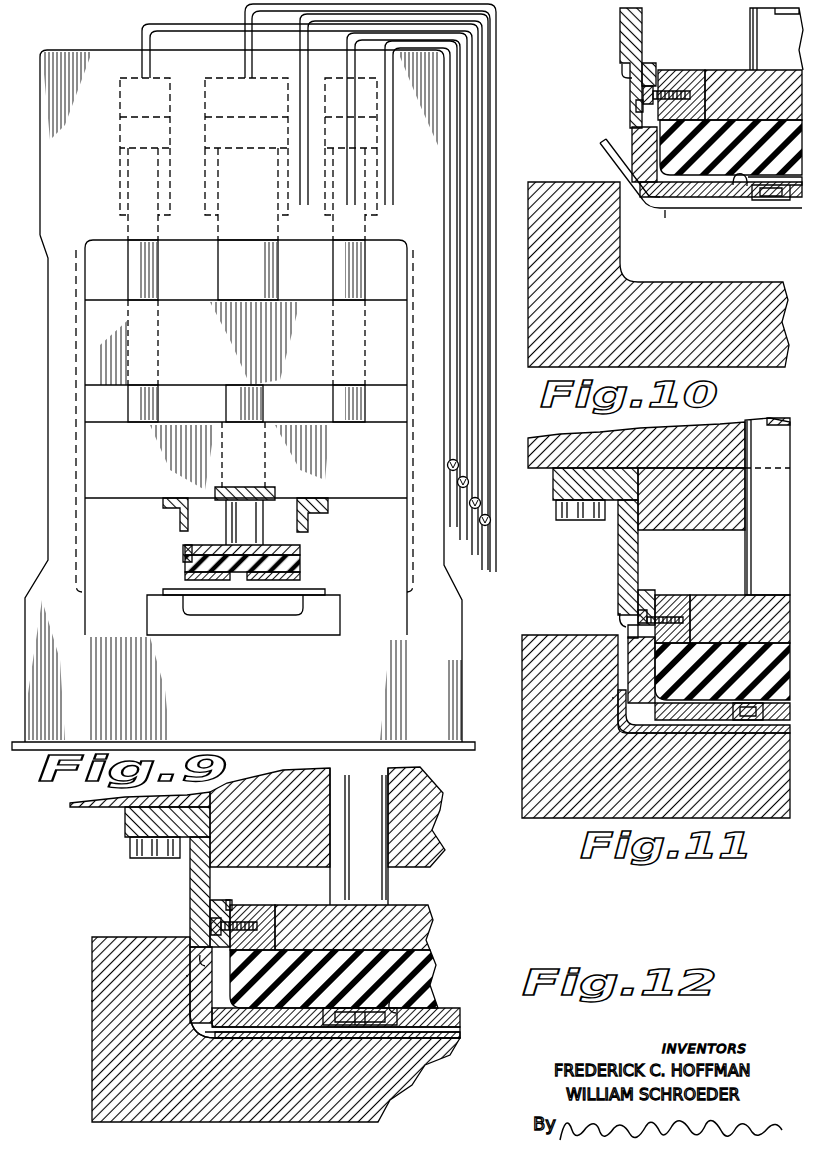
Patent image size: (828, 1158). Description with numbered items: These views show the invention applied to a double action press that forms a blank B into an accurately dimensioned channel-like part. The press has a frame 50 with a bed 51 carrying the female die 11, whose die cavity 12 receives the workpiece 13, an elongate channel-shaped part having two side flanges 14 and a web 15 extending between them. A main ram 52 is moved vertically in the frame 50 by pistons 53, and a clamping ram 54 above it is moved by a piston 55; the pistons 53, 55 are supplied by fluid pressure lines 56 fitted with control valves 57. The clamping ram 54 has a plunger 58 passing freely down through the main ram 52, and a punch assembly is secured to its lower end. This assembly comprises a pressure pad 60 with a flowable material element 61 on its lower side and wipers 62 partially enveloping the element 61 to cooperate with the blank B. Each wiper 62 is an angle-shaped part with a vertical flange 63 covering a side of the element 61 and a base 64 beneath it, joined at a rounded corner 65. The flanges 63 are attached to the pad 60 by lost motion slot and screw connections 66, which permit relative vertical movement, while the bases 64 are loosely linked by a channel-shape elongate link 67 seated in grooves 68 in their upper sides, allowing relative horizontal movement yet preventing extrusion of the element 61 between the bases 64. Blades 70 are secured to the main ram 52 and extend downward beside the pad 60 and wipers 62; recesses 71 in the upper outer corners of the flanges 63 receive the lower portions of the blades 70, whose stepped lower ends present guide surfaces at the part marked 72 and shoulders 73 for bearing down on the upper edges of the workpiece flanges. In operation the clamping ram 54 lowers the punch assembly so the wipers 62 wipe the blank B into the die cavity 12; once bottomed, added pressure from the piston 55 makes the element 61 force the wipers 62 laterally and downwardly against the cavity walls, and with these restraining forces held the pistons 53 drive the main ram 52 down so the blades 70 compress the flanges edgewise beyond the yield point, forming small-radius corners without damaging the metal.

In FIG. 9, the female die 11 is at (338, 620).
In FIG. 9, the die cavity 12 is at (236, 614).
In FIG. 10, the die cavity 12 is at (702, 281).
In FIG. 11, the die cavity 12 is at (756, 740).
In FIG. 12, the die cavity 12 is at (322, 1042).
In FIG. 11, the workpiece 13 is at (613, 697).
In FIG. 12, the workpiece 13 is at (186, 979).
In FIG. 12, the side flanges 14 is at (190, 1000).
In FIG. 12, the web 15 is at (345, 1040).
In FIG. 9, the frame 50 is at (52, 395).
In FIG. 9, the bed 51 is at (284, 693).
In FIG. 9, the main ram 52 is at (369, 454).
In FIG. 9, the pistons 53 is at (130, 130).
In FIG. 9, the clamping ram 54 is at (258, 362).
In FIG. 9, the piston 55 is at (268, 142).
In FIG. 9, the lines 56 is at (475, 443).
In FIG. 9, the control valves 57 is at (489, 523).
In FIG. 9, the plunger 58 is at (232, 401).
In FIG. 10, the plunger 58 is at (788, 53).
In FIG. 11, the plunger 58 is at (776, 549).
In FIG. 12, the plunger 58 is at (375, 830).
In FIG. 9, the pressure pad 60 is at (300, 550).
In FIG. 10, the pressure pad 60 is at (732, 70).
In FIG. 11, the pressure pad 60 is at (712, 597).
In FIG. 12, the pressure pad 60 is at (415, 907).
In FIG. 9, the flowable material element 61 is at (183, 563).
In FIG. 10, the flowable material element 61 is at (708, 122).
In FIG. 11, the flowable material element 61 is at (728, 648).
In FIG. 12, the flowable material element 61 is at (430, 976).
In FIG. 9, the wipers 62 is at (302, 574).
In FIG. 10, the wipers 62 is at (626, 126).
In FIG. 12, the wipers 62 is at (232, 902).
In FIG. 10, the vertical flanges 63 is at (635, 140).
In FIG. 11, the vertical flanges 63 is at (640, 660).
In FIG. 12, the vertical flanges 63 is at (200, 992).
In FIG. 10, the bases 64 is at (722, 204).
In FIG. 11, the bases 64 is at (660, 712).
In FIG. 12, the bases 64 is at (282, 1020).
In FIG. 10, the rounded corners 65 is at (652, 210).
In FIG. 11, the rounded corners 65 is at (622, 712).
In FIG. 12, the rounded corners 65 is at (196, 1032).
In FIG. 10, the lost motion slot and screw connections 66 is at (648, 70).
In FIG. 11, the lost motion slot and screw connections 66 is at (645, 592).
In FIG. 12, the lost motion slot and screw connections 66 is at (211, 907).
In FIG. 10, the channel-shape elongate link 67 is at (772, 202).
In FIG. 11, the channel-shape elongate link 67 is at (760, 704).
In FIG. 12, the channel-shape elongate link 67 is at (392, 1027).
In FIG. 10, the grooves 68 is at (742, 196).
In FIG. 12, the grooves 68 is at (400, 1012).
In FIG. 9, the blades 70 is at (181, 515).
In FIG. 10, the blades 70 is at (620, 28).
In FIG. 11, the blades 70 is at (618, 546).
In FIG. 12, the blades 70 is at (190, 865).
In FIG. 10, the recesses or grooves 71 is at (665, 94).
In FIG. 11, the recesses or grooves 71 is at (668, 618).
In FIG. 12, the recesses or grooves 71 is at (246, 921).
In FIG. 10, the lug 72 is at (638, 106).
In FIG. 11, the lug 72 is at (628, 630).
In FIG. 10, the shoulders 73 is at (625, 74).
In FIG. 11, the shoulders 73 is at (621, 617).
In FIG. 12, the shoulders 73 is at (201, 958).
In FIG. 9, the blank B is at (165, 591).
In FIG. 10, the blank B is at (666, 216).